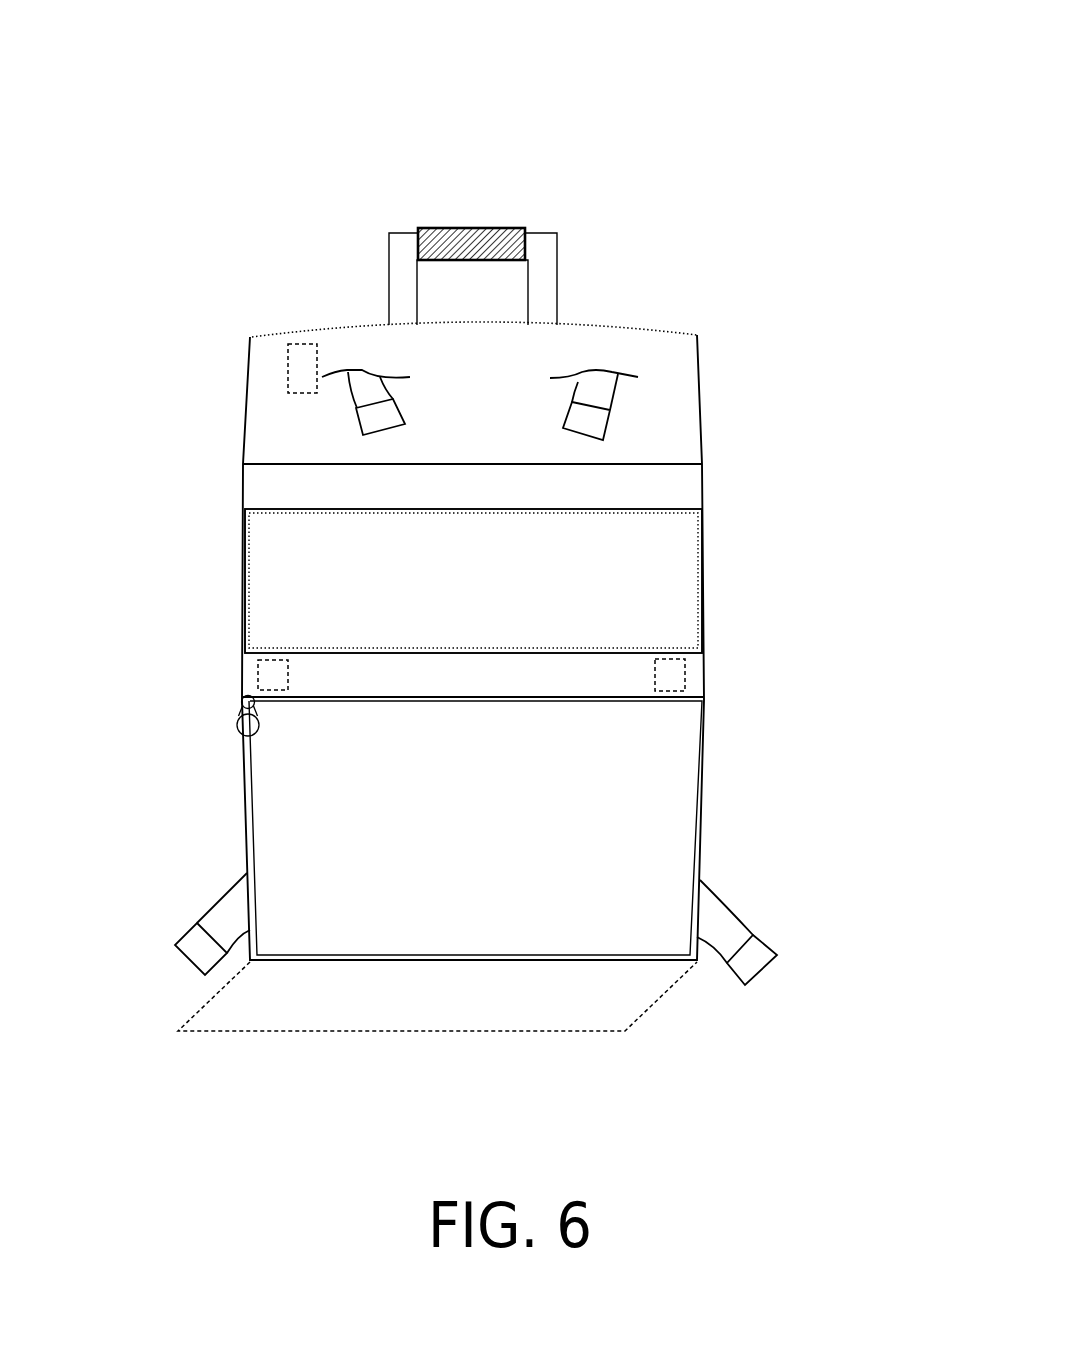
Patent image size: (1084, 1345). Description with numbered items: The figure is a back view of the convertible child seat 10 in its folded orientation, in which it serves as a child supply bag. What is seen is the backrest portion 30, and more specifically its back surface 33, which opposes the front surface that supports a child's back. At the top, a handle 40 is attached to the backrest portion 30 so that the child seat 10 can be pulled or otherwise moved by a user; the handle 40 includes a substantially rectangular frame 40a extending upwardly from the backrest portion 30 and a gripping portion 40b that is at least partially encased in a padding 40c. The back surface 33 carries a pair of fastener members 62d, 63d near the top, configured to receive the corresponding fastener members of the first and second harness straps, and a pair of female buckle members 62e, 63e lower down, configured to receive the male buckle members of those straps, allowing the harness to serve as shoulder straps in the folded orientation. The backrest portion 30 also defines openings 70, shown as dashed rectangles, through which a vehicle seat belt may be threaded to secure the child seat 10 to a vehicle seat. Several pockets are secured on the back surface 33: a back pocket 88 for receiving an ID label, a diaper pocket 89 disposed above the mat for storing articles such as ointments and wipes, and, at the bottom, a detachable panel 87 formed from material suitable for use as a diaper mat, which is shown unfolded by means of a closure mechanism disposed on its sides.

The convertible child seat 10 is at (473, 122).
The backrest portion 30 is at (743, 652).
The back surface 33 is at (650, 485).
The handle 40 is at (585, 257).
The frame 40a is at (400, 280).
The gripping portion 40b is at (412, 235).
The padding 40c is at (473, 247).
The fastener member 62d is at (365, 424).
The fastener member 63d is at (598, 425).
The female buckle member 62e is at (233, 921).
The female buckle member 63e is at (727, 942).
The opening 70 is at (305, 367).
The detachable panel 87 is at (578, 999).
The back pocket 88 is at (523, 598).
The diaper pocket 89 is at (585, 768).